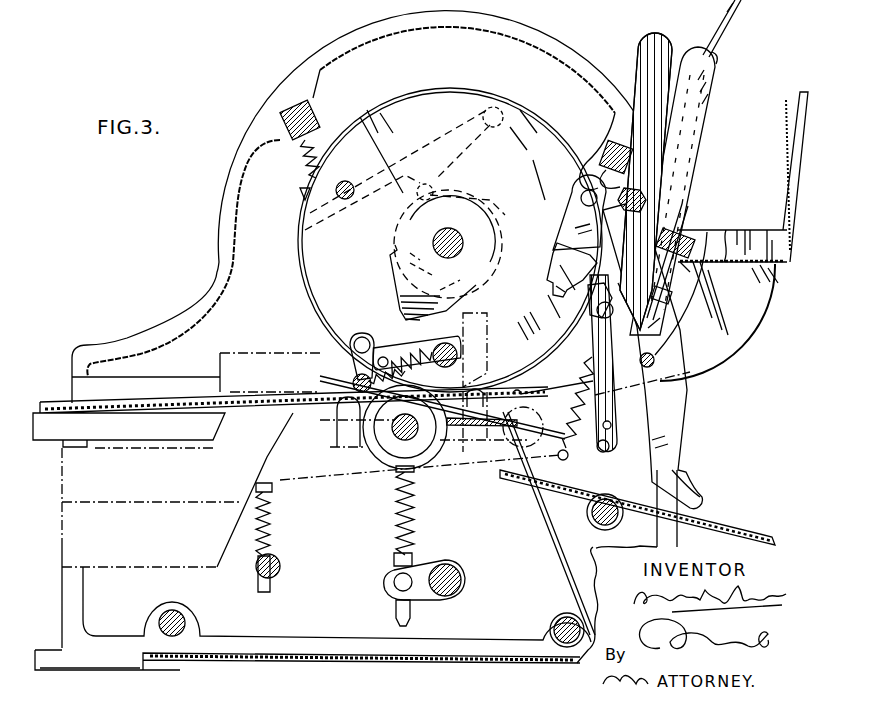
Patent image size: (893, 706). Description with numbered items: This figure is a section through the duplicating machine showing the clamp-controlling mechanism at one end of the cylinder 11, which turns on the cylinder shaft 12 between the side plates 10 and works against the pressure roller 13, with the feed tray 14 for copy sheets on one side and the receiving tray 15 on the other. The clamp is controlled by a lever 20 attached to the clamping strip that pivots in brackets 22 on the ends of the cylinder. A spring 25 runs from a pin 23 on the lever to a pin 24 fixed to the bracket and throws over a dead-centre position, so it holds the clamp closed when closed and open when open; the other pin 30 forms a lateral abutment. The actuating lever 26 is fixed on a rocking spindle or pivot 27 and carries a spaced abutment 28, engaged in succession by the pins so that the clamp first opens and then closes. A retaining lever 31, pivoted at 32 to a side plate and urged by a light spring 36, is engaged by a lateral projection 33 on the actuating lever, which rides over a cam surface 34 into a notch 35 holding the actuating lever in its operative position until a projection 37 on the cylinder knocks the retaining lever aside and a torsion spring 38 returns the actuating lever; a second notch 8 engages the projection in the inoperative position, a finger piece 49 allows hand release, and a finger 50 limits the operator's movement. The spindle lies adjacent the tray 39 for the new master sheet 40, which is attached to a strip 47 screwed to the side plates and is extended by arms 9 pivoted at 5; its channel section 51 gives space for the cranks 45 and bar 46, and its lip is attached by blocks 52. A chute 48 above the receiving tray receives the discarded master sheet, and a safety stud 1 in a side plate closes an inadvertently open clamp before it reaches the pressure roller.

The safety stud 1 is at (348, 197).
The pivot 5 is at (714, 60).
The second notch 8 is at (611, 310).
The arms 9 is at (727, 15).
The side plates 10 is at (312, 67).
The cylinder 11 is at (430, 110).
The cylinder shaft 12 is at (460, 235).
The pressure roller 13 is at (372, 425).
The feed tray 14 is at (241, 408).
The receiving tray 15 is at (656, 506).
The lever 20 is at (408, 357).
The brackets 22 is at (443, 344).
The pin 23 is at (354, 384).
The pin 24 is at (458, 355).
The spring 25 is at (352, 370).
The actuating lever 26 is at (652, 65).
The pivot 27 is at (646, 198).
The abutment 28 is at (600, 450).
The pin 30 is at (360, 337).
The retaining lever 31 is at (584, 222).
The pivot 32 is at (654, 360).
The lateral projection 33 is at (598, 314).
The cam surface 34 is at (598, 296).
The notch 35 is at (556, 256).
The spring 36 is at (575, 428).
The projection 37 is at (400, 294).
The torsion spring 38 is at (605, 162).
The tray 39 is at (715, 78).
The master sheet 40 is at (712, 24).
The cranks 45 is at (702, 300).
The bar 46 is at (715, 347).
The strip 47 is at (696, 232).
The chute 48 is at (585, 385).
The finger piece 49 is at (685, 493).
The finger 50 is at (557, 288).
The channel section 51 is at (680, 270).
The blocks 52 is at (660, 318).